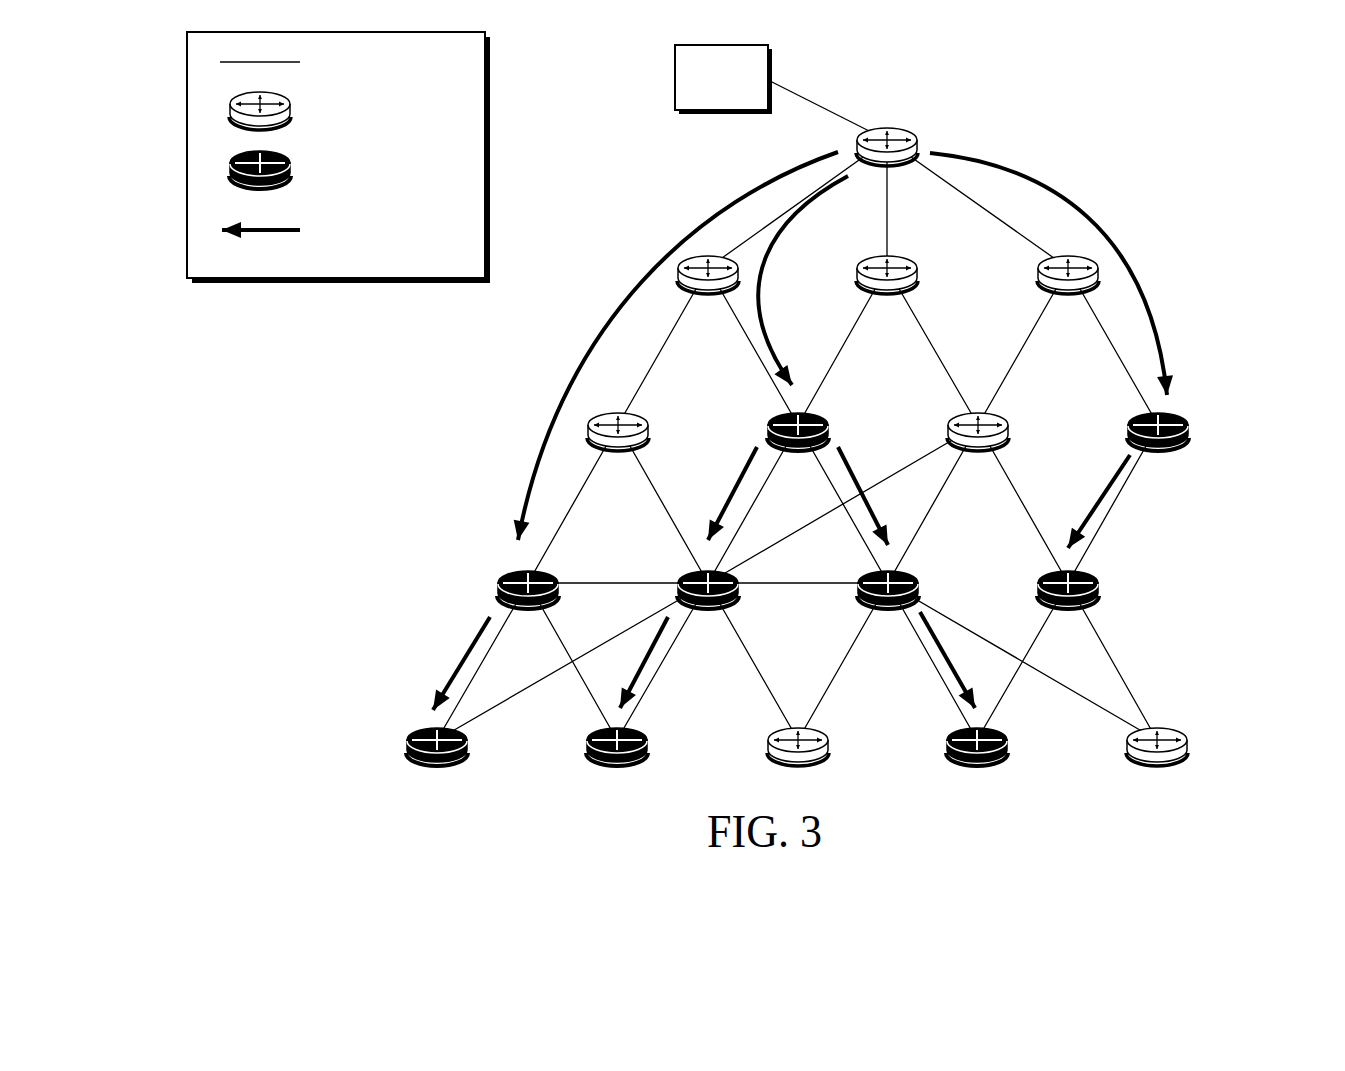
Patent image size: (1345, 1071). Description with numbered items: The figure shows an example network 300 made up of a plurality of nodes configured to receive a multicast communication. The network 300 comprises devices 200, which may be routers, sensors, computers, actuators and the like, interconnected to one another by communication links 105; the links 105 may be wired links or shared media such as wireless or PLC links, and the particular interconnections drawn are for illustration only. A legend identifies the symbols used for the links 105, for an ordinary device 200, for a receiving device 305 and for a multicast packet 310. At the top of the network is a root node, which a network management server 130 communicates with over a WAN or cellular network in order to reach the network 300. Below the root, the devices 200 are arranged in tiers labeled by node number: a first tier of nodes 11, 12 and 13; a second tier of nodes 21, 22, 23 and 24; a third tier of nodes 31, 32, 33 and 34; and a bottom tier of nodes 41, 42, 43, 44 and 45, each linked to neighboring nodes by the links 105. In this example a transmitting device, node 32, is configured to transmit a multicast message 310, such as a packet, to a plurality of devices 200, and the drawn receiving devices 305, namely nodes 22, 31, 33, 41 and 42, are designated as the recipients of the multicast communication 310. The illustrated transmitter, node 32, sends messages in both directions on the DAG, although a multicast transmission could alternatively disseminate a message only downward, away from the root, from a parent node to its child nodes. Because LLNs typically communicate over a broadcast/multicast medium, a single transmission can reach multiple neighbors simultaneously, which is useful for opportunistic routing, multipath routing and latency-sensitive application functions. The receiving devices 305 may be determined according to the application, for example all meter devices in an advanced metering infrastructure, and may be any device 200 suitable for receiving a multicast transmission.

The communication links 105 is at (327, 60).
The device 200 is at (340, 111).
The receiving device 305 is at (340, 174).
The multicast message 310 is at (338, 240).
The network management server 130 is at (705, 101).
The network 300 is at (1243, 90).
The node 11 is at (708, 294).
The node 12 is at (887, 294).
The node 13 is at (1068, 294).
The node 21 is at (618, 451).
The node 22 is at (798, 451).
The node 23 is at (978, 451).
The node 24 is at (1158, 451).
The node 31 is at (528, 608).
The node 32 is at (708, 608).
The node 33 is at (888, 608).
The node 34 is at (1068, 608).
The node 41 is at (437, 764).
The node 42 is at (617, 764).
The node 43 is at (798, 764).
The node 44 is at (977, 764).
The node 45 is at (1157, 764).